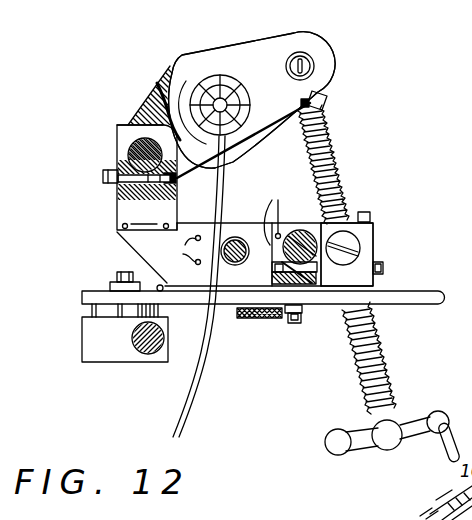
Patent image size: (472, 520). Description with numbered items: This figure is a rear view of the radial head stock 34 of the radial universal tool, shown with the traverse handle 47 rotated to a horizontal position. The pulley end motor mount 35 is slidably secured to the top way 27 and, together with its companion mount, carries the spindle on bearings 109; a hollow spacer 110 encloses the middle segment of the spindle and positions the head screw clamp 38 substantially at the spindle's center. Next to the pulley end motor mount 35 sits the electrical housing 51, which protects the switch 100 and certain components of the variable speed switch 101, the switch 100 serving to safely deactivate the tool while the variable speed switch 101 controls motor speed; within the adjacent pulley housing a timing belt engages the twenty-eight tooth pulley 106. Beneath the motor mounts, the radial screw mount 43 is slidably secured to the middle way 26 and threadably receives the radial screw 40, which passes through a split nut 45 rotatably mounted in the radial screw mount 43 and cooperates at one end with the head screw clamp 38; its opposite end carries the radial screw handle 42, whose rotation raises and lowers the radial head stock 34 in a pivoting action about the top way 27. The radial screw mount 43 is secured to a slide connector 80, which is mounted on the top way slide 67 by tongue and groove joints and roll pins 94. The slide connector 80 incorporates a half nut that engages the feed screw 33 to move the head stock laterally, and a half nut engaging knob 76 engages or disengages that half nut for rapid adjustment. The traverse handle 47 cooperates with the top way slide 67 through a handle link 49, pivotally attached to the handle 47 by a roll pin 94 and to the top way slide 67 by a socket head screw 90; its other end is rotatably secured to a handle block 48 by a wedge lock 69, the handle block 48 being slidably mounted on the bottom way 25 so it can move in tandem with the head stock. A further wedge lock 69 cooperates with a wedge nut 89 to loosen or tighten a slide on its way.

The radial head stock 34 is at (166, 55).
The pulley end motor mount 35 is at (160, 65).
The electrical housing 51 is at (252, 52).
The switch 100 is at (314, 66).
The variable speed switch 101 is at (240, 116).
The head screw clamp 38 is at (330, 97).
The radial screw 40 is at (342, 189).
The wedge nut 89 is at (178, 182).
The top way 27 is at (123, 143).
The wedge lock 69 is at (104, 183).
The top way slide 67 is at (146, 218).
The slide connector 80 is at (127, 248).
The roll pin 94 is at (219, 225).
The feed screw 33 is at (237, 237).
The middle way 26 is at (300, 236).
The split nut 45 is at (355, 247).
The radial screw mount 43 is at (374, 251).
The traverse handle 47 is at (414, 303).
The half nut engaging knob 76 is at (252, 318).
The socket head screw 90 is at (292, 320).
The handle link 49 is at (306, 320).
The handle block 48 is at (120, 357).
The bottom way 25 is at (150, 347).
The radial screw handle 42 is at (392, 450).
The 28 tooth pulley 106 is at (441, 498).
The spacer 110 is at (422, 517).
The bearings 109 is at (409, 509).